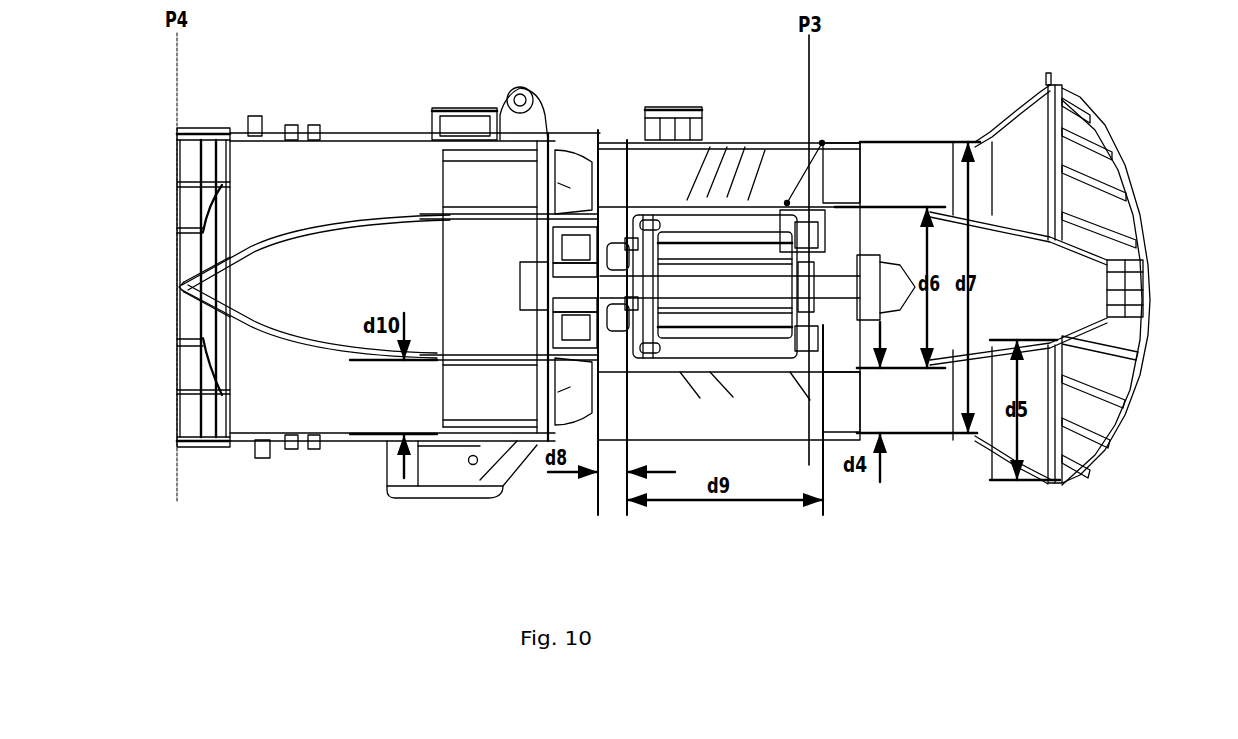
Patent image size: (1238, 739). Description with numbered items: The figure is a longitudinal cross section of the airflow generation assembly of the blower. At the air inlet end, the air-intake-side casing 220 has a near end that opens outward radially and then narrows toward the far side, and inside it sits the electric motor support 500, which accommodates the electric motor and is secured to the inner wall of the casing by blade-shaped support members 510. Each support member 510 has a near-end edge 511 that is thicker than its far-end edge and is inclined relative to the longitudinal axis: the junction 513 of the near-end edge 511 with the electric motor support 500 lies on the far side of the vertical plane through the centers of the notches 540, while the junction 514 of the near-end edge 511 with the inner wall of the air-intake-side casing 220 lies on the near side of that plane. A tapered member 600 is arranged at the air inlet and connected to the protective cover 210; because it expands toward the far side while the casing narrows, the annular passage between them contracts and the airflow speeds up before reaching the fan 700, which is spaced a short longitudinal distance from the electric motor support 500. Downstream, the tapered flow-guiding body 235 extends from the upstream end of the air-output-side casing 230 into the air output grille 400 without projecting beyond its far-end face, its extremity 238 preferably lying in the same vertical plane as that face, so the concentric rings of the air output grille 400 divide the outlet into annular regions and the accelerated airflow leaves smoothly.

The air output grille 400 is at (190, 128).
The air-output-side casing 230 is at (360, 130).
The fan 700 is at (500, 100).
The electric motor support 500 is at (605, 180).
The support member 510 is at (670, 108).
The junction of the near-end edge and the electric motor support 513 is at (770, 180).
The near-end edge 511 is at (778, 165).
The junction of the near-end edge and the inner wall of the air-intake-side casing 514 is at (825, 142).
The notch 540 is at (815, 210).
The air-intake-side casing 220 is at (1007, 115).
The tapered member 600 is at (1030, 222).
The protective cover 210 is at (1120, 230).
The extremity of the tapered flow-guiding body 238 is at (178, 288).
The tapered flow-guiding body 235 is at (300, 332).